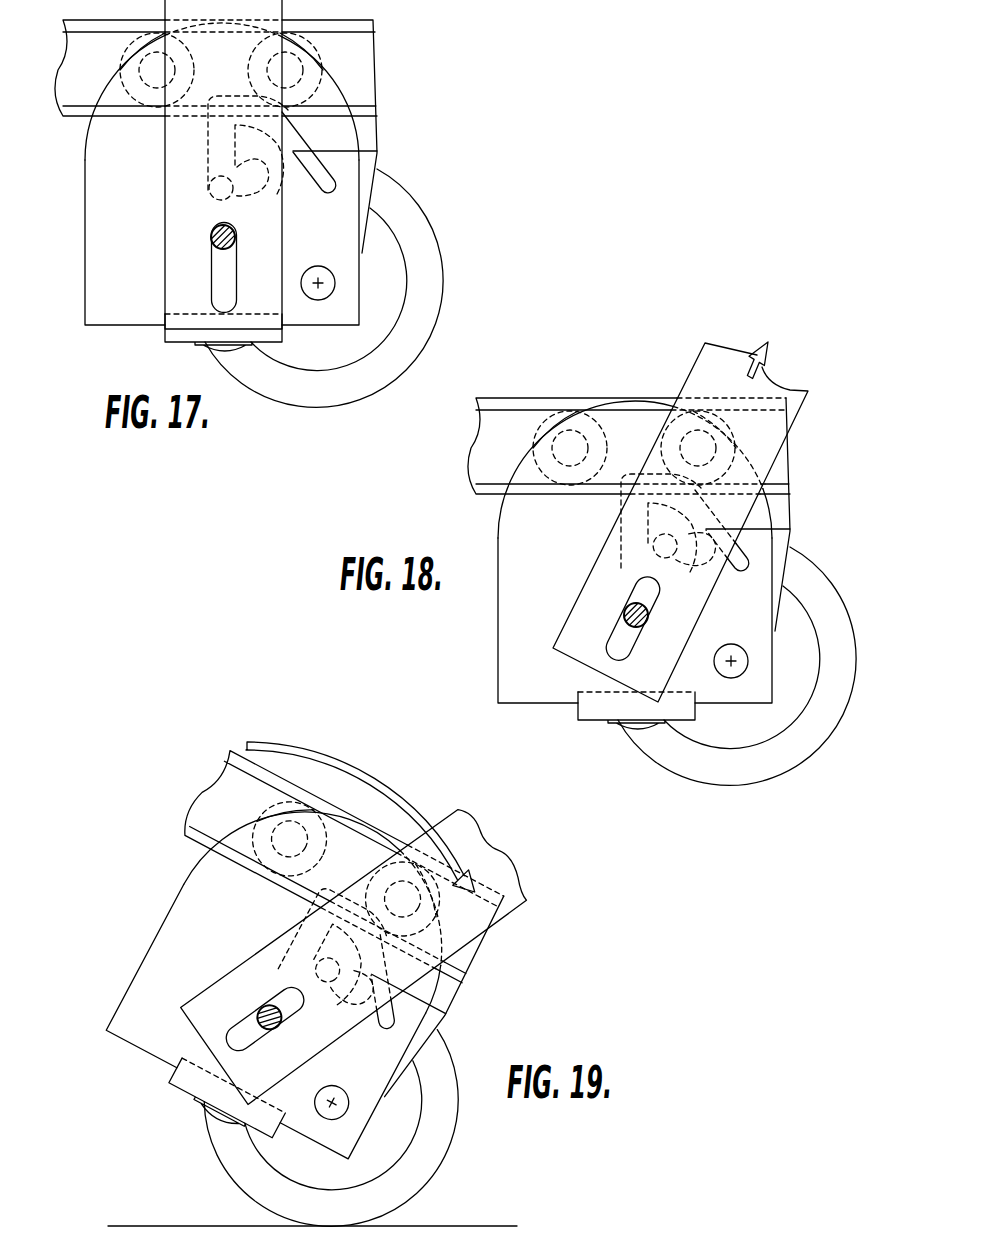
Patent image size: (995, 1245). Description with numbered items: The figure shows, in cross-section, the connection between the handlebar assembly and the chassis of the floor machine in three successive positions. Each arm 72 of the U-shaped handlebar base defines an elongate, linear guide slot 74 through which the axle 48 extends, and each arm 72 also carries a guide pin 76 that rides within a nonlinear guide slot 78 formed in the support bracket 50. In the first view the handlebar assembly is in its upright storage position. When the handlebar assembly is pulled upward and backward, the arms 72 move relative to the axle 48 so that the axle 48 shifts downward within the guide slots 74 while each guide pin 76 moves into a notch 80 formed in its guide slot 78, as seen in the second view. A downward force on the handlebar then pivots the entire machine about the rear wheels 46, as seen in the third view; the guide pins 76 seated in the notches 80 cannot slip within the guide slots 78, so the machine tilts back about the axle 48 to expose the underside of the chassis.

In FIG. 17, the rear wheels 46 is at (444, 290).
In FIG. 18, the rear wheels 46 is at (856, 668).
In FIG. 19, the rear wheels 46 is at (431, 1167).
In FIG. 17, the axle 48 is at (211, 231).
In FIG. 18, the axle 48 is at (626, 612).
In FIG. 19, the axle 48 is at (251, 1007).
In FIG. 17, the support bracket 50 is at (84, 313).
In FIG. 18, the support bracket 50 is at (498, 693).
In FIG. 19, the support bracket 50 is at (112, 1003).
In FIG. 17, the arm 72 is at (165, 250).
In FIG. 18, the arm 72 is at (563, 627).
In FIG. 19, the arm 72 is at (186, 1005).
In FIG. 17, the guide slot 74 is at (211, 271).
In FIG. 18, the guide slot 74 is at (607, 650).
In FIG. 19, the guide slot 74 is at (220, 1031).
In FIG. 17, the guide pin 76 is at (212, 185).
In FIG. 18, the guide pin 76 is at (657, 552).
In FIG. 19, the guide pin 76 is at (275, 975).
In FIG. 17, the guide slot 78 is at (323, 140).
In FIG. 18, the guide slot 78 is at (749, 542).
In FIG. 19, the guide slot 78 is at (411, 1000).
In FIG. 17, the notch 80 is at (276, 201).
In FIG. 18, the notch 80 is at (707, 585).
In FIG. 19, the notch 80 is at (342, 1036).